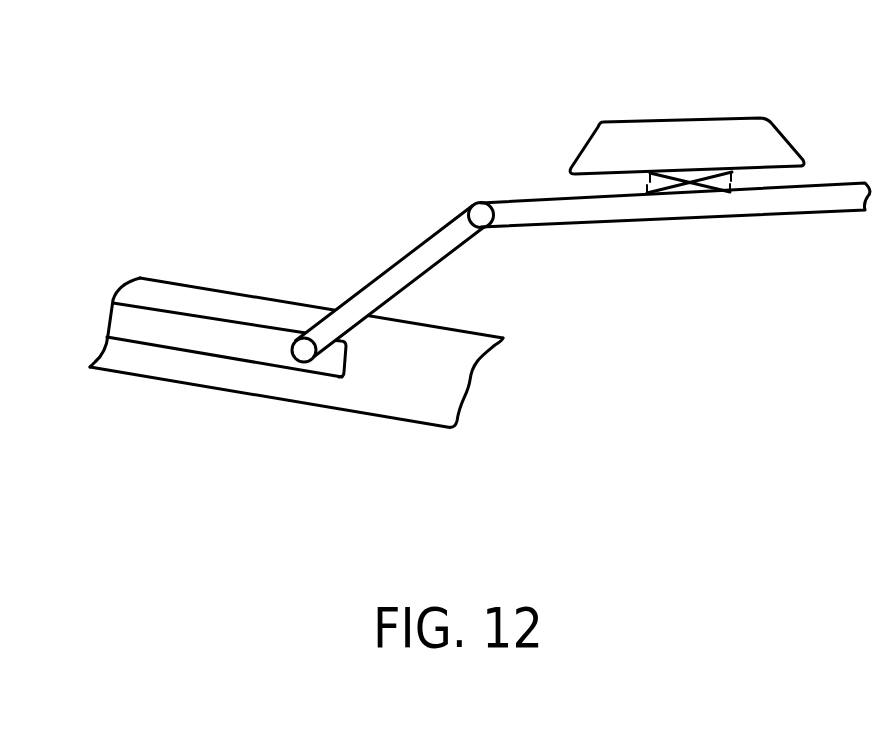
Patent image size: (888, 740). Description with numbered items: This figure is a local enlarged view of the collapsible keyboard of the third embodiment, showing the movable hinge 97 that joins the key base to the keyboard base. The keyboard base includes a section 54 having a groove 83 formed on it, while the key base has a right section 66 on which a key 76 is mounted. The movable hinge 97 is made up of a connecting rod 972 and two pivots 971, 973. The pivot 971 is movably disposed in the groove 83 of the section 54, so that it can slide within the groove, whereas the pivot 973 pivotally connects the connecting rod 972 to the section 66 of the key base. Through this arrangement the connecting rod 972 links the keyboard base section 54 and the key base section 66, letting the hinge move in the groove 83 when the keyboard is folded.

The section of the keyboard base 54 is at (330, 395).
The right section of the key base 66 is at (802, 203).
The key 76 is at (682, 138).
The groove 83 is at (192, 332).
The movable hinge 97 is at (226, 211).
The pivot 971 is at (305, 350).
The connecting rod 972 is at (400, 273).
The pivot 973 is at (478, 205).